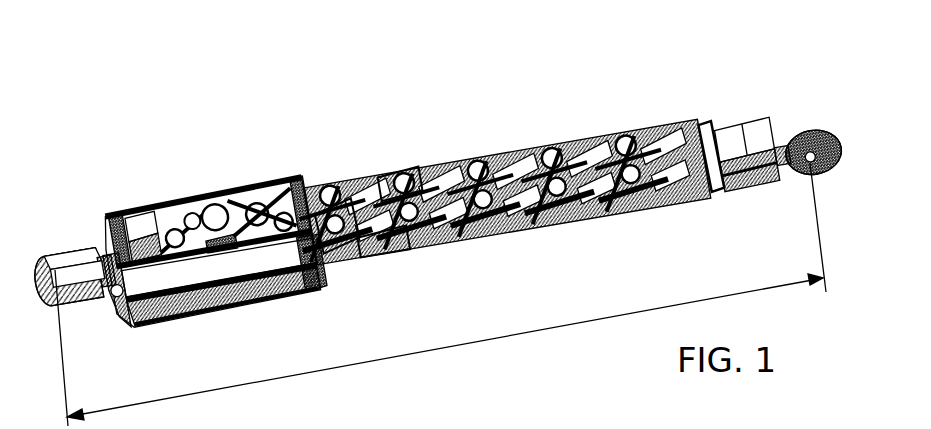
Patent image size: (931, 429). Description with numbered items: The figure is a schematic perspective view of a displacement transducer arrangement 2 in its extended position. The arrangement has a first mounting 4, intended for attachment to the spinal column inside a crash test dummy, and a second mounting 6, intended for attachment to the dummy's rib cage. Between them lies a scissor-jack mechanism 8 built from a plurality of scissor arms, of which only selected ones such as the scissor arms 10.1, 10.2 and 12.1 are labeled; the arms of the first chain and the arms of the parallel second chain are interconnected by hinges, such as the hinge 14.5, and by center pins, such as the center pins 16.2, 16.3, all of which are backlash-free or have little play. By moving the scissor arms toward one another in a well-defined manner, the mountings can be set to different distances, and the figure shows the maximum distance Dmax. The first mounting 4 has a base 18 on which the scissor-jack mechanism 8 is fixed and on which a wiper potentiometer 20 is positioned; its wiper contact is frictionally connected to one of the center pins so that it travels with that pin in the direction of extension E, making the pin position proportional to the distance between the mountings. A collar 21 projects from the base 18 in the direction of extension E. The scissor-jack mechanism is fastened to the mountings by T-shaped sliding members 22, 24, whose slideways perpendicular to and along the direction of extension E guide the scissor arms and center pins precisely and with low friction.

The displacement transducer arrangement 2 is at (126, 46).
The first mounting 4 is at (42, 262).
The second mounting 6 is at (807, 133).
The scissor-jack mechanism 8 is at (505, 124).
The scissor arm 10.1 is at (176, 215).
The scissor arm 10.2 is at (276, 208).
The scissor arm 12.1 is at (200, 198).
The hinge 14.5 is at (390, 184).
The center pin 16.2 is at (316, 252).
The center pin 16.3 is at (370, 262).
The base 18 is at (108, 303).
The wiper potentiometer 20 is at (157, 200).
The collar 21 is at (284, 290).
The sliding member 22 is at (124, 205).
The sliding member 24 is at (707, 127).
The direction of extension E is at (578, 101).
The maximum distance Dmax is at (440, 294).